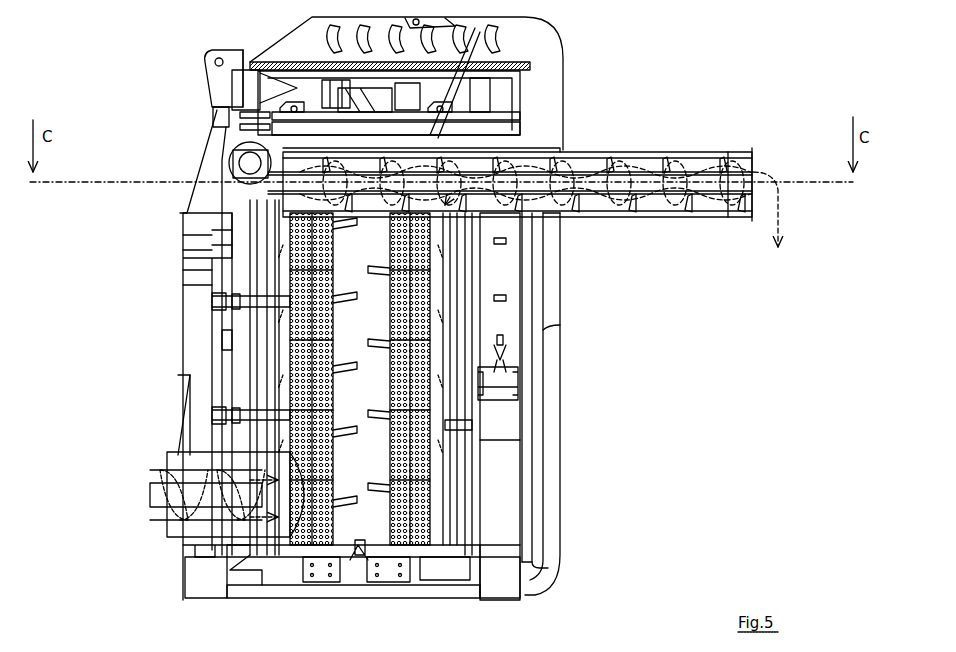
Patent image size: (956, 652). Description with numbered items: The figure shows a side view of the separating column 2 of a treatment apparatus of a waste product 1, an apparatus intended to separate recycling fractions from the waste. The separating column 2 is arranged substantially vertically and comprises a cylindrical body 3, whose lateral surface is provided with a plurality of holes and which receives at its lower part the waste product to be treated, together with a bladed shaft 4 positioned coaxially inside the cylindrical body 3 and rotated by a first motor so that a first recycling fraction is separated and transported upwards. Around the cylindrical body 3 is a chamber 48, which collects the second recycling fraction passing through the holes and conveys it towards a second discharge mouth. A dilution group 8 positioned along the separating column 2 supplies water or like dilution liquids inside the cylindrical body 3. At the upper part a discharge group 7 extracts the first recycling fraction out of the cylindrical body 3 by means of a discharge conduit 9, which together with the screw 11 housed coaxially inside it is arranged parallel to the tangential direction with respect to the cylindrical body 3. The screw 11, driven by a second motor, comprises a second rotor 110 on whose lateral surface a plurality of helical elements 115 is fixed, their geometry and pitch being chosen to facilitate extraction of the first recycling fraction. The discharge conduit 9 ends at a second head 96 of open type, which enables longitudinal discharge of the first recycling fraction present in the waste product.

The treatment apparatus of a waste product 1 is at (130, 65).
The separating column 2 is at (500, 518).
The cylindrical body 3 is at (440, 453).
The bladed shaft 4 is at (292, 413).
The discharge group 7 is at (655, 78).
The dilution group 8 is at (214, 300).
The discharge conduit 9 is at (703, 222).
The screw 11 is at (610, 207).
The chamber 48 is at (445, 408).
The second head 96 is at (757, 152).
The second rotor 110 is at (577, 173).
The helical elements 115 is at (727, 150).